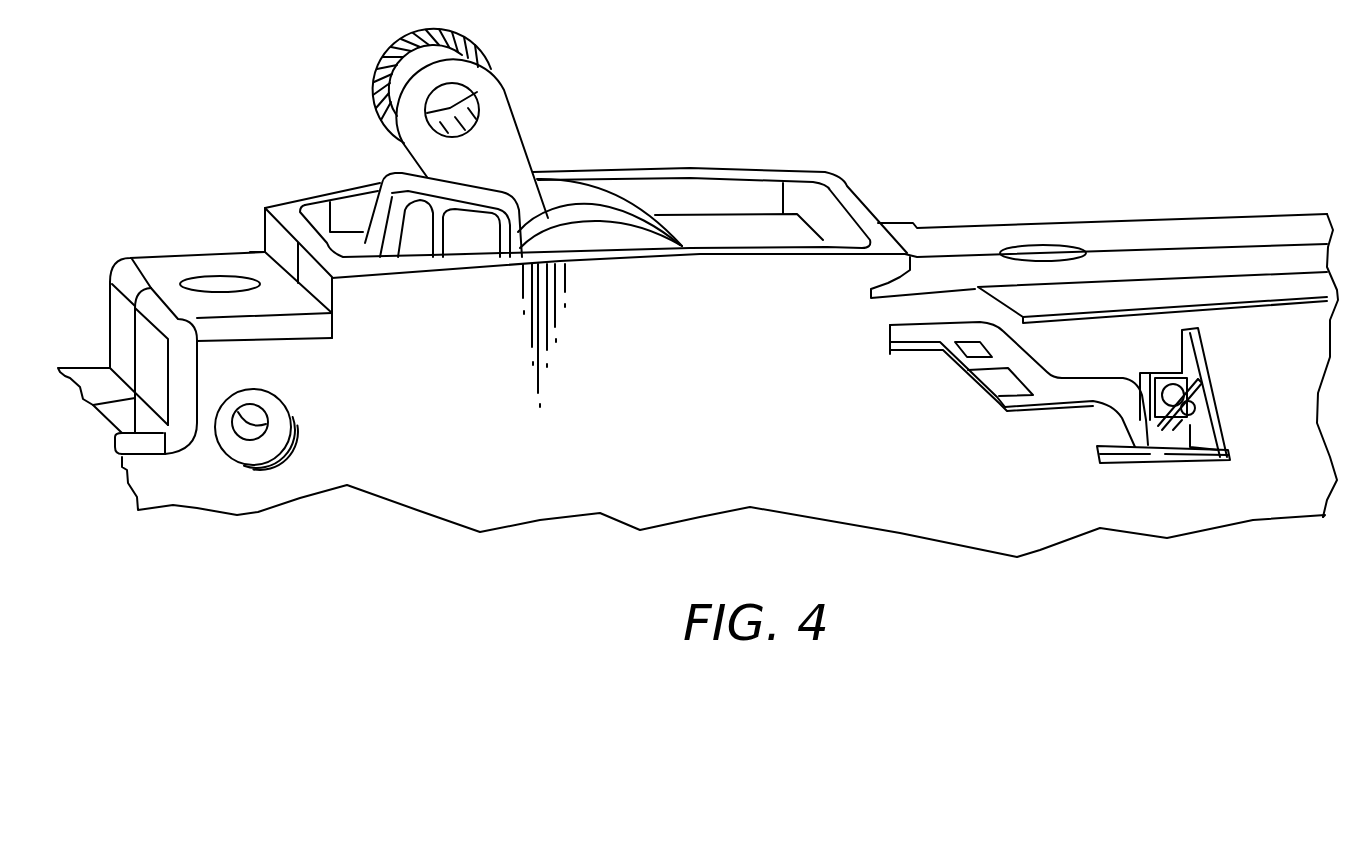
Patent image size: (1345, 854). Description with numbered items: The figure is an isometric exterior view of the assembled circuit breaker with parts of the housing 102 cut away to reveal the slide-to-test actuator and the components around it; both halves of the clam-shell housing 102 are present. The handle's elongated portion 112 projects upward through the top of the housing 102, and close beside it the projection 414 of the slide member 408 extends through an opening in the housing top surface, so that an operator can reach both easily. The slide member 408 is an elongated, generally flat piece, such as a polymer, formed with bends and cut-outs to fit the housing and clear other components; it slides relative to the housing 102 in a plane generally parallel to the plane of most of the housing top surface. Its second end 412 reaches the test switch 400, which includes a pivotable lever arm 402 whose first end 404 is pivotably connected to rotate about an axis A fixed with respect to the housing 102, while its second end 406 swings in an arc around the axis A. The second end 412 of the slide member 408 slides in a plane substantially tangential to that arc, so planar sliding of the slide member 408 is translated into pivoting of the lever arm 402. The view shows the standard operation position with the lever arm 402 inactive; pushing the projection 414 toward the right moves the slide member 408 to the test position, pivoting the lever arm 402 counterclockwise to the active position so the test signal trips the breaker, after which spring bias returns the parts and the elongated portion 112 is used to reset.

The housing 102 is at (834, 221).
The elongated portion 112 is at (500, 92).
The projection 414 is at (393, 177).
The slide member 408 is at (1008, 340).
The second end of the slide member 412 is at (1143, 427).
The test switch 400 is at (1168, 375).
The pivotable lever arm 402 is at (1180, 430).
The first end of the lever arm 404 is at (1197, 383).
The second end of the lever arm 406 is at (1143, 450).
The axis A is at (1195, 412).